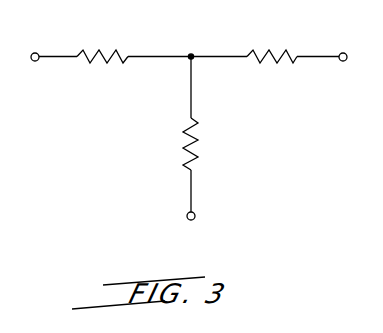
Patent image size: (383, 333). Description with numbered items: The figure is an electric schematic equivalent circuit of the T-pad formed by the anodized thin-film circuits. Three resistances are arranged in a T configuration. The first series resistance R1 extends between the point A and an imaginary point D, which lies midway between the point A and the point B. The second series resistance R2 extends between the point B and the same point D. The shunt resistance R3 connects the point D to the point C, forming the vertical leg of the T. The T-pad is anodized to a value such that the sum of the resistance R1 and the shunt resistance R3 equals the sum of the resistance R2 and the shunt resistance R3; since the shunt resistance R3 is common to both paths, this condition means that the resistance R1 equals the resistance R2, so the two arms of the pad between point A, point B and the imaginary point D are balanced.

The point A is at (34, 46).
The point B is at (344, 46).
The point C is at (190, 231).
The imaginary point D is at (192, 45).
The resistance R1 is at (108, 31).
The resistance R2 is at (272, 41).
The shunt resistance R3 is at (208, 144).